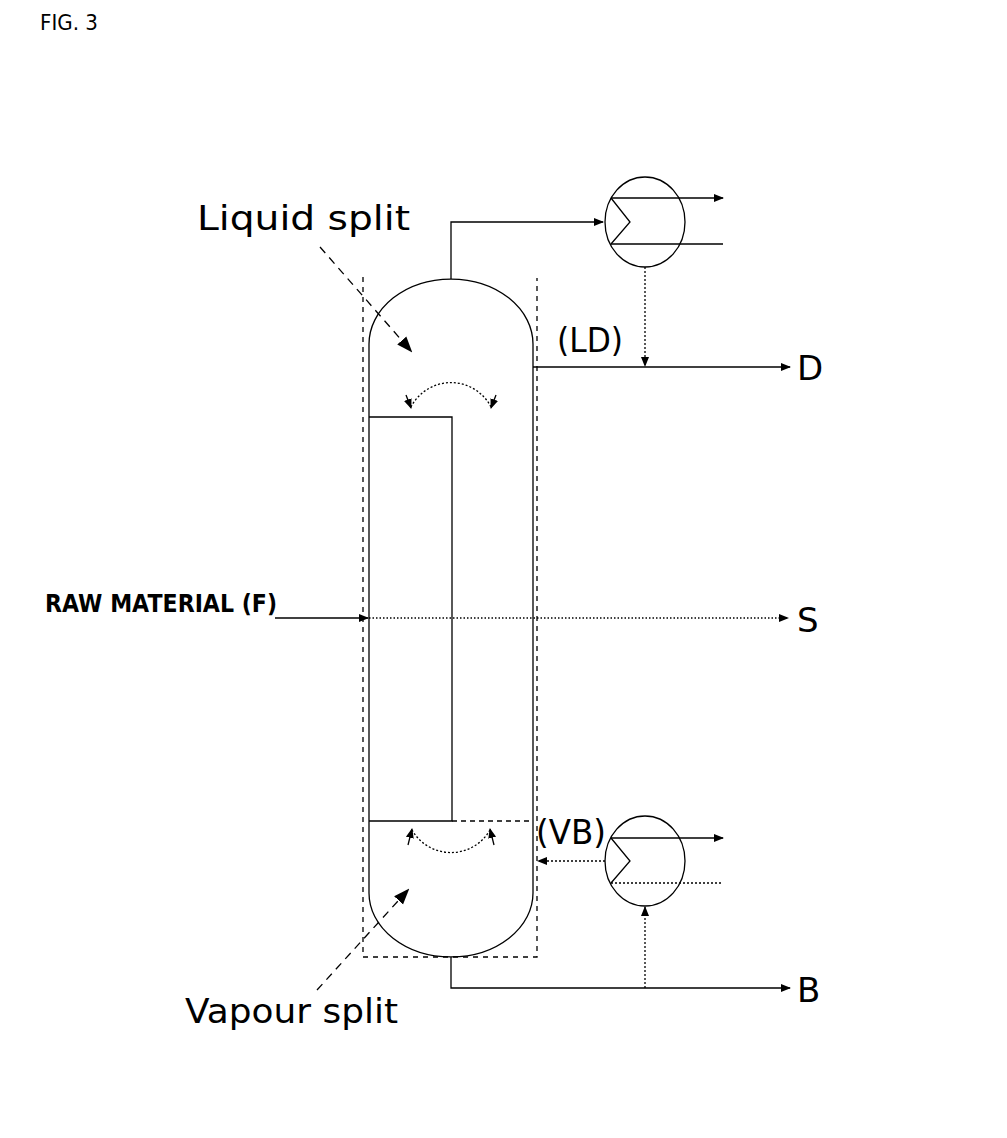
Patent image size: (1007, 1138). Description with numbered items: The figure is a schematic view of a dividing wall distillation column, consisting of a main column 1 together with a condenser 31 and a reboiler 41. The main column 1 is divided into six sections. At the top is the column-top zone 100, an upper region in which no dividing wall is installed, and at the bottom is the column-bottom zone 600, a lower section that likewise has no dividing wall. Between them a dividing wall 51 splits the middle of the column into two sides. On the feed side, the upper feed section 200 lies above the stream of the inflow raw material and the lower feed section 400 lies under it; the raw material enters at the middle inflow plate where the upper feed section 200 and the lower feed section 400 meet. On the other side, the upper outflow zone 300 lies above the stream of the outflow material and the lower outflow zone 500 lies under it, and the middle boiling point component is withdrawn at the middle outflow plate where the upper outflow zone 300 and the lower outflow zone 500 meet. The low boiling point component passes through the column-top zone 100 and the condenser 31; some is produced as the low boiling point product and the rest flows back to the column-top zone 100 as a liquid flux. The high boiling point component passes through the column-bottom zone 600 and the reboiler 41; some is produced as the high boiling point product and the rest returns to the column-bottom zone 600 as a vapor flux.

The main column 1 is at (350, 460).
The condenser 31 is at (645, 177).
The reboiler 41 is at (645, 816).
The dividing wall 51 is at (452, 484).
The column-top zone 100 is at (451, 350).
The upper feed section 200 is at (408, 564).
The upper outflow zone 300 is at (492, 564).
The lower feed section 400 is at (408, 722).
The lower outflow zone 500 is at (492, 722).
The column-bottom zone 600 is at (451, 887).